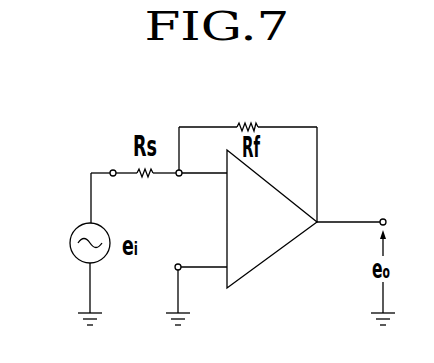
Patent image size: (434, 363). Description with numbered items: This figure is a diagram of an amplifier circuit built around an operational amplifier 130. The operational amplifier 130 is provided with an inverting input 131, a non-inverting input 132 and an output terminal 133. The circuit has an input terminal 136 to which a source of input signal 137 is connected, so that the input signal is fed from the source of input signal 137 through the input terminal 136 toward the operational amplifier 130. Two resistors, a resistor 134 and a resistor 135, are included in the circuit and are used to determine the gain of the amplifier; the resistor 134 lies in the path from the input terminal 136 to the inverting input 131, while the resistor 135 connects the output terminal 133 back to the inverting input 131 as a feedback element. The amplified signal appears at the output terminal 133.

The operational amplifier 130 is at (282, 193).
The inverting input 131 is at (181, 177).
The non-inverting input 132 is at (178, 264).
The output terminal 133 is at (388, 203).
The resistor 134 is at (147, 177).
The resistor 135 is at (249, 107).
The input terminal 136 is at (122, 150).
The source of input signal 137 is at (70, 246).